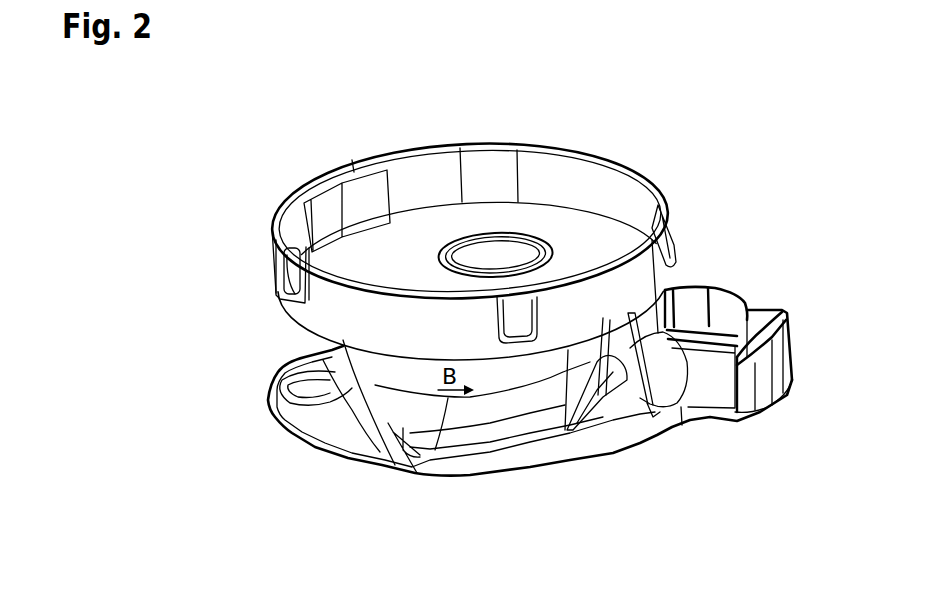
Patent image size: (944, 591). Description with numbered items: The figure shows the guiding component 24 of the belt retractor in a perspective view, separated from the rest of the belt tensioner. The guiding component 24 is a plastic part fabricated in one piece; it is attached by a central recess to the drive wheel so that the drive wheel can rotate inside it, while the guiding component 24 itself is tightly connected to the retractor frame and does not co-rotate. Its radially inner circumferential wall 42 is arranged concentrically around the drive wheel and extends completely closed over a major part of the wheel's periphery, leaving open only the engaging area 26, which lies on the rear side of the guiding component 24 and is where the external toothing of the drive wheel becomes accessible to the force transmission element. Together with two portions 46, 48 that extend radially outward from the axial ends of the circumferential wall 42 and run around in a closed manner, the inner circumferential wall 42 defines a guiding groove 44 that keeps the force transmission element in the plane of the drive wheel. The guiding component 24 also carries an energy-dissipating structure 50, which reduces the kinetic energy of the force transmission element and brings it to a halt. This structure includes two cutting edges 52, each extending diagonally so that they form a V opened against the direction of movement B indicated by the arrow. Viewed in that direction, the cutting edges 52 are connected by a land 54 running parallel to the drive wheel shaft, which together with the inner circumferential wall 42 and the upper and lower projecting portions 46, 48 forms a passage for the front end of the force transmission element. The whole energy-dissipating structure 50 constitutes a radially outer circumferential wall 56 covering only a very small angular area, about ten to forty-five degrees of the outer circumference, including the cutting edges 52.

The guiding component 24 is at (180, 118).
The engaging area 26 is at (703, 253).
The radially inner circumferential wall 42 is at (383, 372).
The guiding groove 44 is at (240, 334).
The radially projecting portion 46 is at (273, 418).
The radially projecting portion 48 is at (267, 293).
The energy-dissipating structure 50 is at (580, 385).
The cutting edge 52 is at (575, 352).
The land 54 is at (650, 405).
The radially outer circumferential wall 56 is at (627, 325).